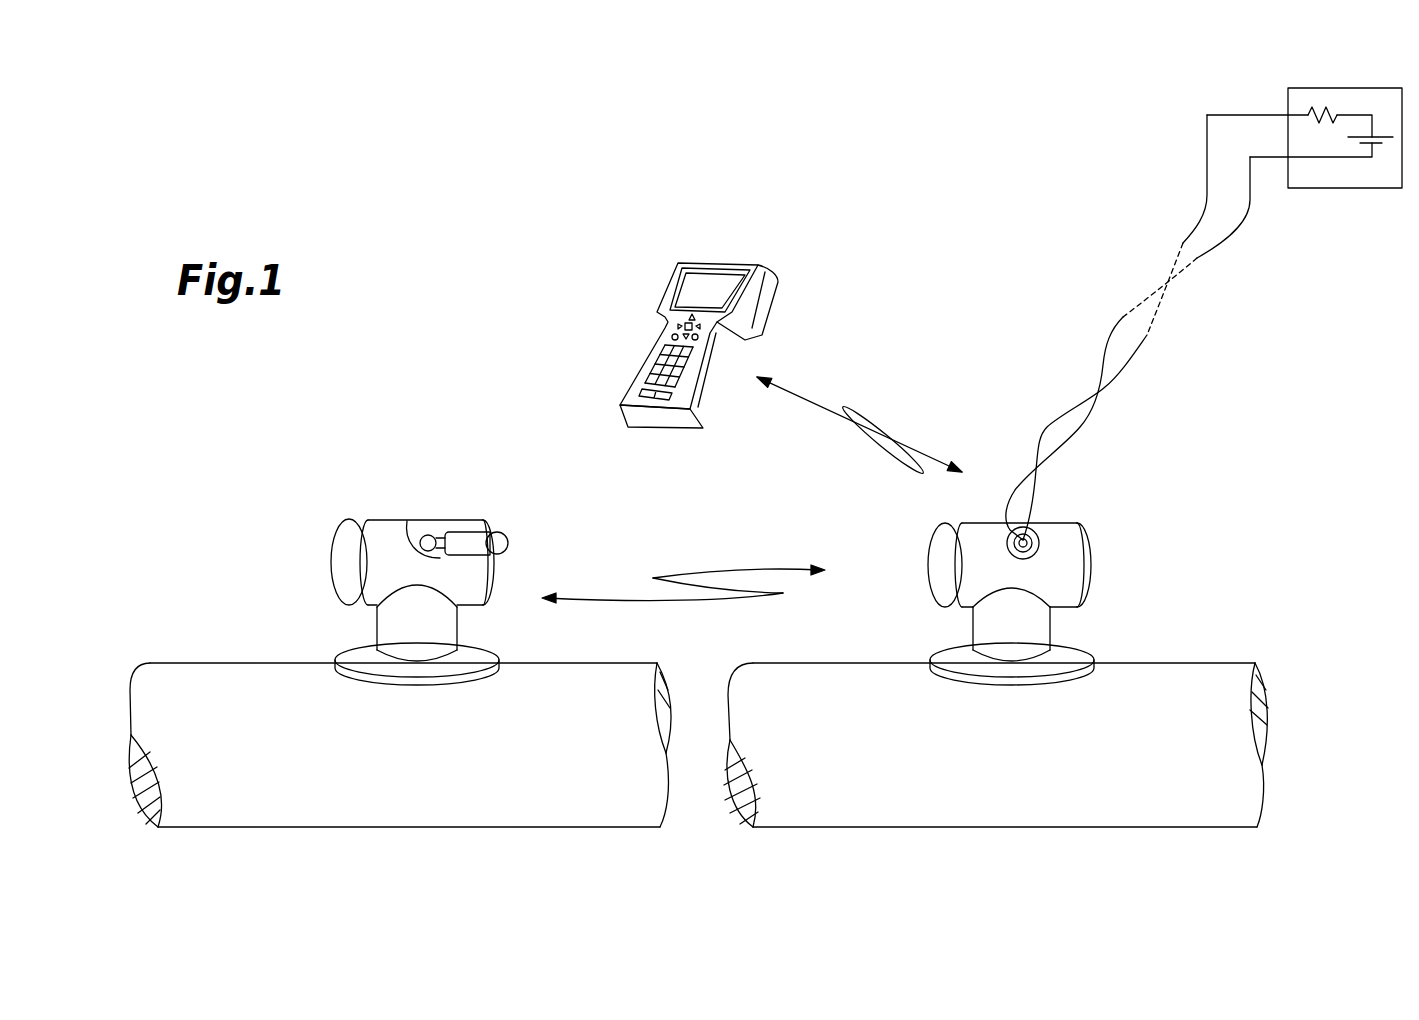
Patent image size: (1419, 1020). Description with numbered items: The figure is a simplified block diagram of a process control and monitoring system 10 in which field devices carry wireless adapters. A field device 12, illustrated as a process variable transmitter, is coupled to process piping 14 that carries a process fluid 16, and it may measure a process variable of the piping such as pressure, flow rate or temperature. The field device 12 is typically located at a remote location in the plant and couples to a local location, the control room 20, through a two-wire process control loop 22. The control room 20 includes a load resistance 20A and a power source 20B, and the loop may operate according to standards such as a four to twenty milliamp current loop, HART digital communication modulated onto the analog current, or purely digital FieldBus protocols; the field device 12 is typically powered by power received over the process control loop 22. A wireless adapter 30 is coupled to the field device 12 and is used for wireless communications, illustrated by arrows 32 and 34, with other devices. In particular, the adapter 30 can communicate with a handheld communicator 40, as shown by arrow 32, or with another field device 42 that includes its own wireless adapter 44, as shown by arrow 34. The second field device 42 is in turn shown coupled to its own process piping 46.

The process control and monitoring system 10 is at (447, 258).
The field device 12 is at (1100, 548).
The process piping 14 is at (1168, 693).
The process fluid 16 is at (998, 753).
The control room 20 is at (1311, 147).
The load resistance 20A is at (1320, 107).
The power source 20B is at (1377, 144).
The two-wire process control loop 22 is at (1093, 418).
The wireless adapter 30 is at (1030, 536).
The arrow 32 is at (880, 417).
The arrow 34 is at (688, 568).
The handheld communicator 40 is at (743, 292).
The field device 42 is at (375, 525).
The wireless adapter 44 is at (478, 543).
The process piping 46 is at (388, 753).